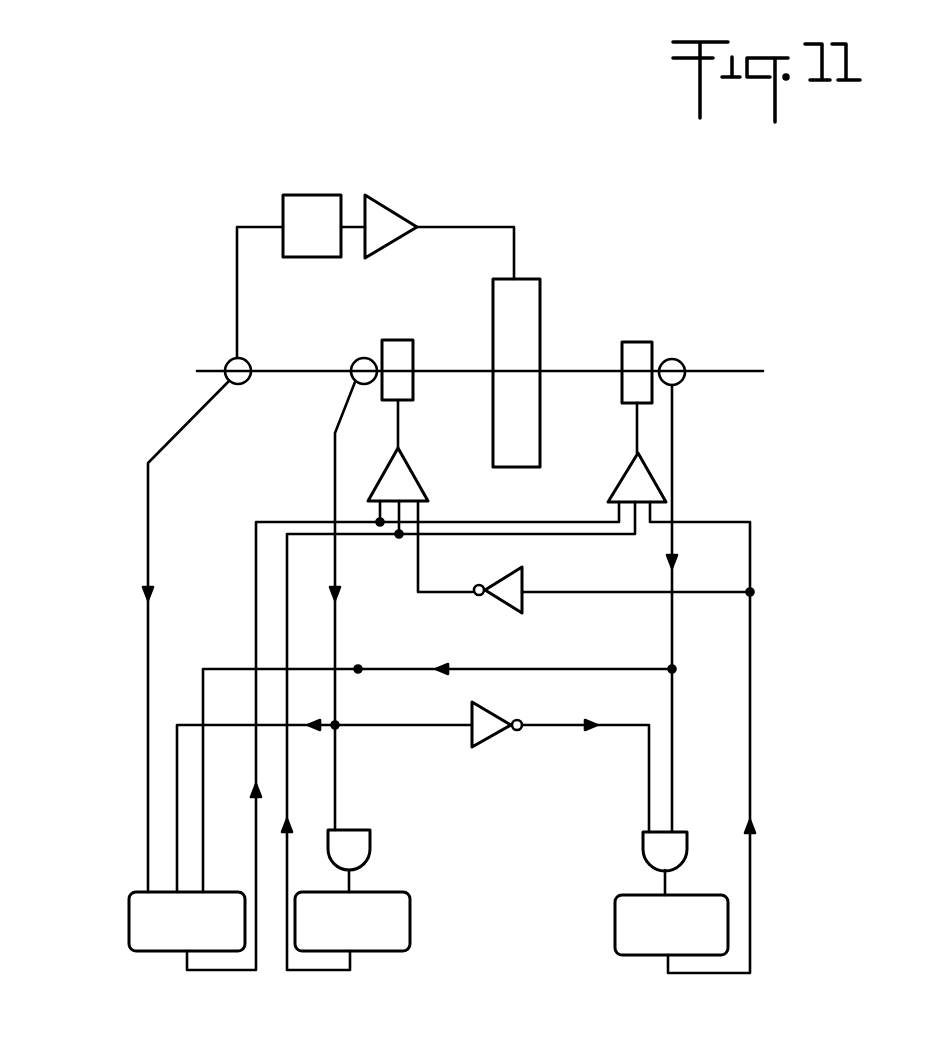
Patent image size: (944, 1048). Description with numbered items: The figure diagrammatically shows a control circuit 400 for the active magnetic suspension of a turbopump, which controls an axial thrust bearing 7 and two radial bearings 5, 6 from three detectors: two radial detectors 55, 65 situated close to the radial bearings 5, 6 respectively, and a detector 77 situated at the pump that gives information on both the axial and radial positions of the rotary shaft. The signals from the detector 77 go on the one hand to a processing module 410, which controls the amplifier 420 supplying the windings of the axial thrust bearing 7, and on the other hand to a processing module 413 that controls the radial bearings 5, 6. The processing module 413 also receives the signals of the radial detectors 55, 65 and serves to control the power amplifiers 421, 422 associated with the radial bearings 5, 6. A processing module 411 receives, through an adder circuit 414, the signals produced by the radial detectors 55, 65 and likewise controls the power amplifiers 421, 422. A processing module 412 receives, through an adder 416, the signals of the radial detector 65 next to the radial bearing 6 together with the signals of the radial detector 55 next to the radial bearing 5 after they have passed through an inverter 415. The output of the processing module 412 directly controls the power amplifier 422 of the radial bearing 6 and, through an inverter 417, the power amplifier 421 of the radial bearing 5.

The control circuit 400 is at (185, 370).
The detector 77 is at (250, 360).
The radial detector 55 is at (353, 361).
The radial bearing 5 is at (415, 341).
The axial thrust bearing 7 is at (546, 280).
The radial bearing 6 is at (637, 336).
The radial detector 65 is at (684, 364).
The processing module 410 is at (302, 198).
The amplifier 420 is at (395, 208).
The power amplifier 421 is at (412, 487).
The power amplifier 422 is at (623, 484).
The inverter 417 is at (517, 591).
The inverter 415 is at (492, 713).
The adder circuit 414 is at (360, 846).
The adder 416 is at (648, 846).
The processing module 413 is at (167, 942).
The processing module 411 is at (373, 942).
The processing module 412 is at (652, 953).